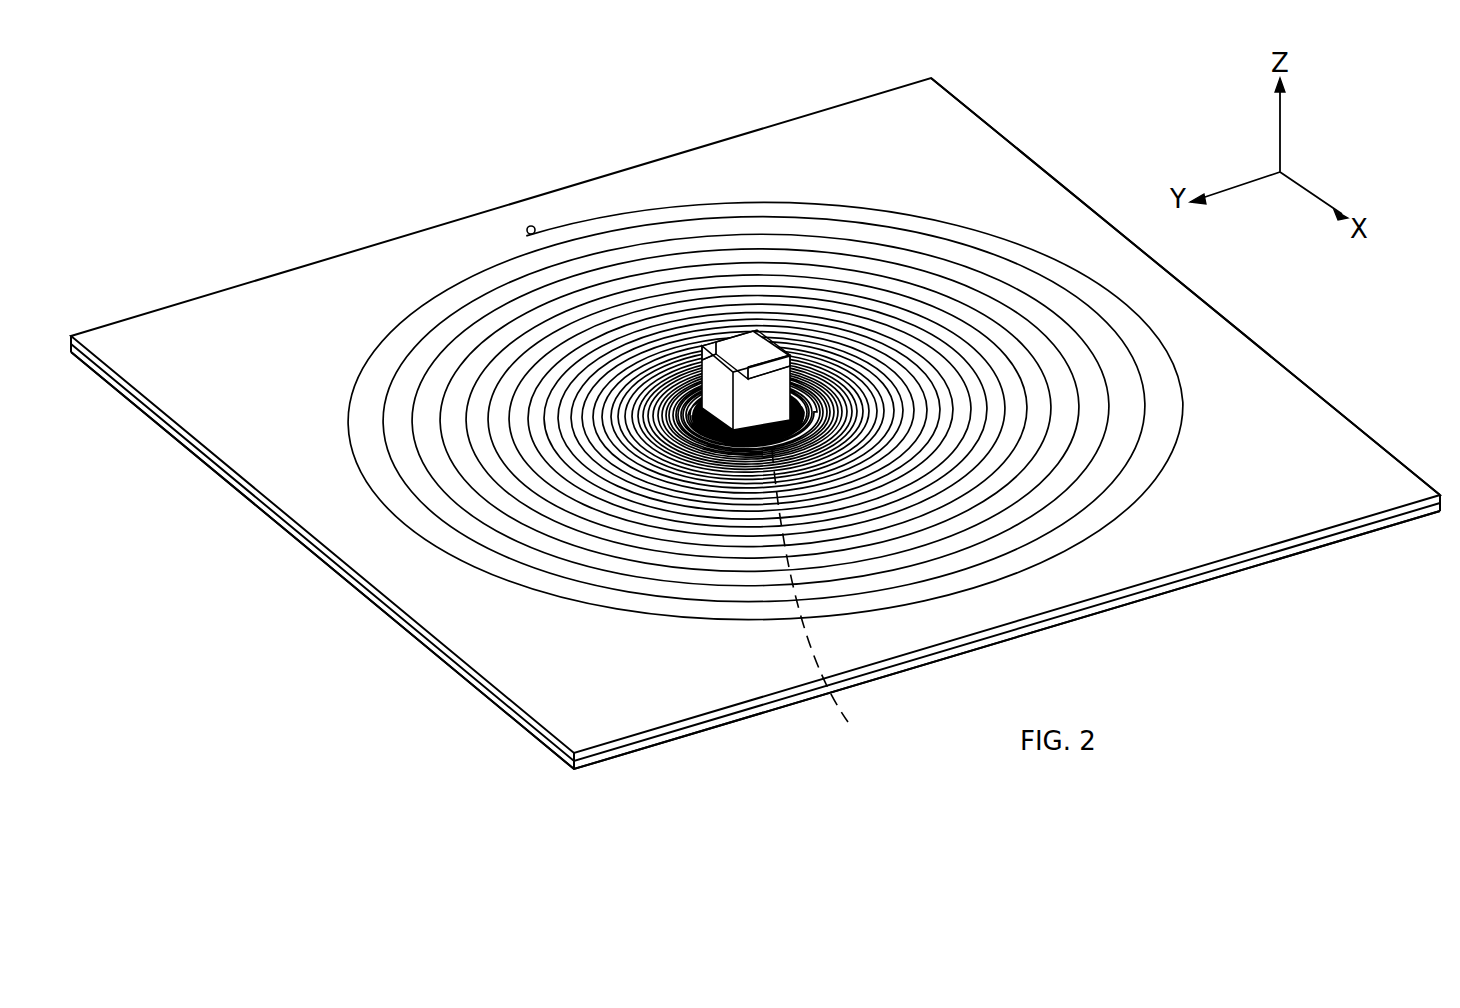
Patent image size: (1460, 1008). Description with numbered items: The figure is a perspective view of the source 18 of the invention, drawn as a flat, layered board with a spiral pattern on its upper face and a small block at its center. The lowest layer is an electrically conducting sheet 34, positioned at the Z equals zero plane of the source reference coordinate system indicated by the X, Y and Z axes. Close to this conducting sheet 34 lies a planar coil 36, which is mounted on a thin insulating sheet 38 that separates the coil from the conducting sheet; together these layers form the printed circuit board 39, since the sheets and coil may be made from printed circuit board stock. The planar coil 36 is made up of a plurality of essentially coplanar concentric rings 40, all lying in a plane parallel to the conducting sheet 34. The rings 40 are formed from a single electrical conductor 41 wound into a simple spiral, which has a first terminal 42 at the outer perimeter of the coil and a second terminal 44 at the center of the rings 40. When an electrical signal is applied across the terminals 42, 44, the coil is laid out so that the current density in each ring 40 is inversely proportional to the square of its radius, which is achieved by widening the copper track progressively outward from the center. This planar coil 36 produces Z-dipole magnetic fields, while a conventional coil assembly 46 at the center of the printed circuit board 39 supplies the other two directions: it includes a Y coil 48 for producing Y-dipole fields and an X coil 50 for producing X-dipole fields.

The source 18 is at (1300, 377).
The electrically conducting sheet 34 is at (1300, 553).
The planar coil 36 is at (1172, 357).
The insulating sheet 38 is at (1374, 522).
The printed circuit board 39 is at (1383, 460).
The concentric rings 40 is at (1170, 460).
The electrical conductor 41 is at (987, 227).
The first terminal 42 is at (532, 226).
The second terminal 44 is at (831, 599).
The coil assembly 46 is at (737, 340).
The Y coil 48 is at (709, 351).
The X coil 50 is at (769, 367).